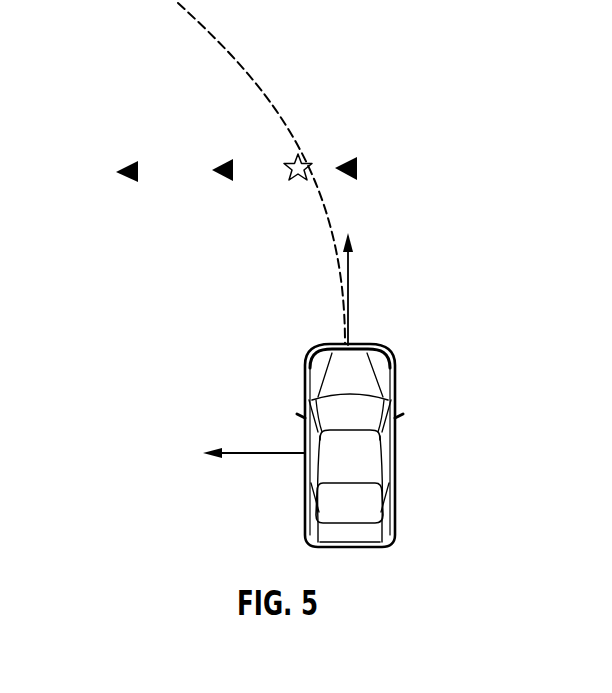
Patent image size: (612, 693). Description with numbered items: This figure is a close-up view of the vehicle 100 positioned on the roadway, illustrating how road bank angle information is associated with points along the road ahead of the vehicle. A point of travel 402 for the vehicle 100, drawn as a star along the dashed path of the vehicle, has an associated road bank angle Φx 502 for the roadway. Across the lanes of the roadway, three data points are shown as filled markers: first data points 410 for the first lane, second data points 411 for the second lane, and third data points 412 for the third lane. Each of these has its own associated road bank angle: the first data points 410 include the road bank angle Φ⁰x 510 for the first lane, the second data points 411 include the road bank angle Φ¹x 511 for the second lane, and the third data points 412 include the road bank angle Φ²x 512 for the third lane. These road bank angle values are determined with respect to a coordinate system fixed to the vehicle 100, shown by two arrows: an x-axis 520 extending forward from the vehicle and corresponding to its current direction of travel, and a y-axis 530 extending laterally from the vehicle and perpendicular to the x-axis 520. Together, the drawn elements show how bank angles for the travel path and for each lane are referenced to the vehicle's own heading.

The vehicle 100 is at (392, 467).
The point of travel 402 is at (290, 181).
The first data points 410 is at (357, 168).
The second data points 411 is at (218, 183).
The third data points 412 is at (125, 184).
The road bank angle Φx 502 is at (302, 95).
The road bank angle Φ⁰x 510 is at (355, 95).
The road bank angle Φ¹x 511 is at (195, 97).
The road bank angle Φ²x 512 is at (110, 97).
The x-axis 520 is at (348, 297).
The y-axis 530 is at (253, 453).